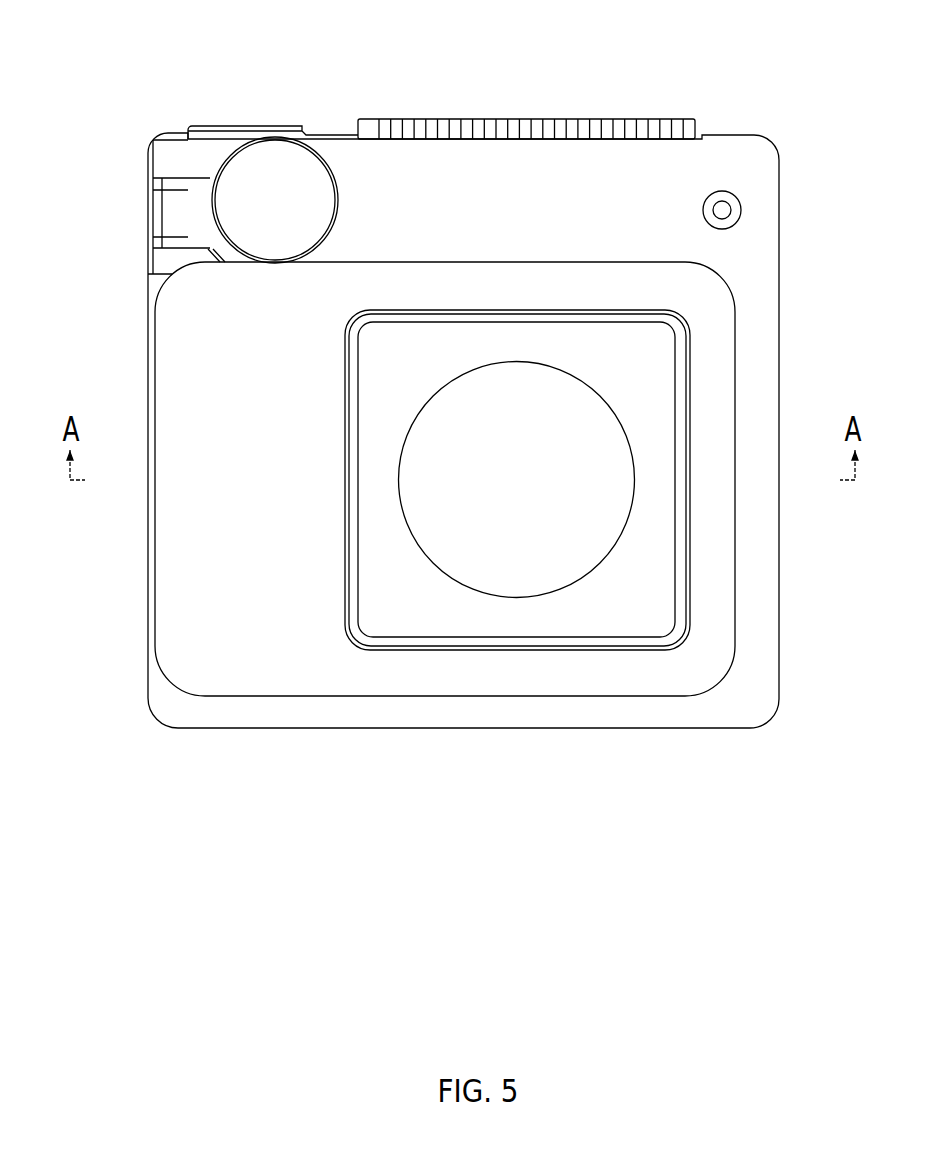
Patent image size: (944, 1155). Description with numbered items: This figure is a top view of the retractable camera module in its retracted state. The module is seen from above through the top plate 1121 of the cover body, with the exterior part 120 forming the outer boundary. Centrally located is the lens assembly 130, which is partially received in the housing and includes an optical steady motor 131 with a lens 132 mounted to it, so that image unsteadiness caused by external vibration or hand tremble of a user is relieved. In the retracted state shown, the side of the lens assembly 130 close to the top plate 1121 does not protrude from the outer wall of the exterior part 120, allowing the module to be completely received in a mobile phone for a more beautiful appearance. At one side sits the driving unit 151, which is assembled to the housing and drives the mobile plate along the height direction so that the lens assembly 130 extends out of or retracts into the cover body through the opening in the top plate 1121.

The exterior part 120 is at (683, 290).
The top plate 1121 is at (393, 180).
The driving unit 151 is at (273, 178).
The lens assembly 130 is at (478, 33).
The optical steady motor 131 is at (485, 345).
The lens 132 is at (563, 407).